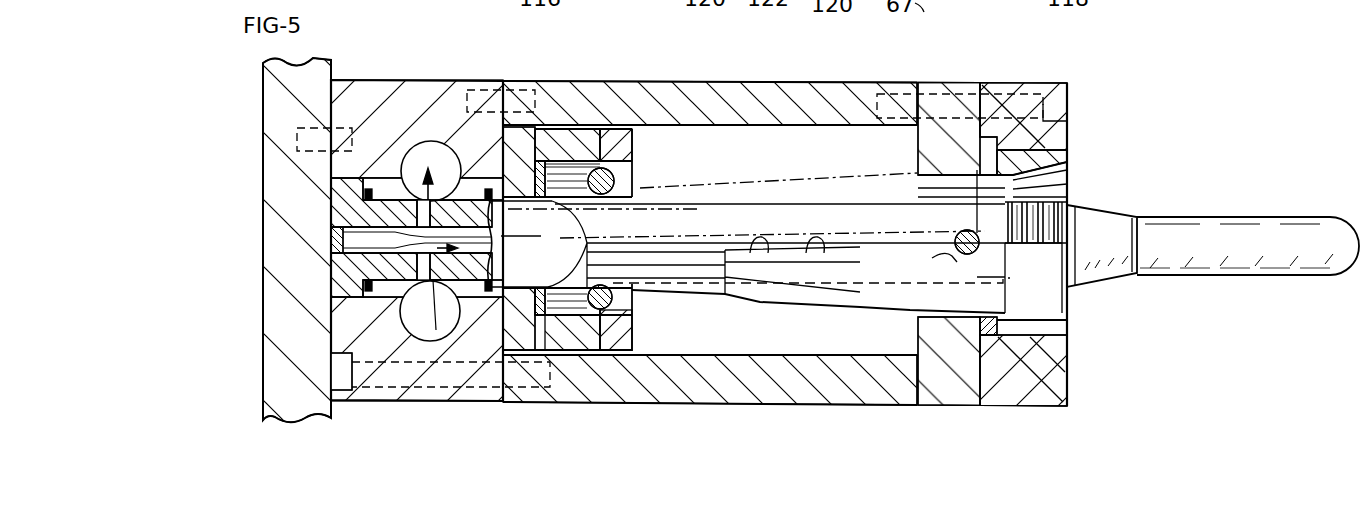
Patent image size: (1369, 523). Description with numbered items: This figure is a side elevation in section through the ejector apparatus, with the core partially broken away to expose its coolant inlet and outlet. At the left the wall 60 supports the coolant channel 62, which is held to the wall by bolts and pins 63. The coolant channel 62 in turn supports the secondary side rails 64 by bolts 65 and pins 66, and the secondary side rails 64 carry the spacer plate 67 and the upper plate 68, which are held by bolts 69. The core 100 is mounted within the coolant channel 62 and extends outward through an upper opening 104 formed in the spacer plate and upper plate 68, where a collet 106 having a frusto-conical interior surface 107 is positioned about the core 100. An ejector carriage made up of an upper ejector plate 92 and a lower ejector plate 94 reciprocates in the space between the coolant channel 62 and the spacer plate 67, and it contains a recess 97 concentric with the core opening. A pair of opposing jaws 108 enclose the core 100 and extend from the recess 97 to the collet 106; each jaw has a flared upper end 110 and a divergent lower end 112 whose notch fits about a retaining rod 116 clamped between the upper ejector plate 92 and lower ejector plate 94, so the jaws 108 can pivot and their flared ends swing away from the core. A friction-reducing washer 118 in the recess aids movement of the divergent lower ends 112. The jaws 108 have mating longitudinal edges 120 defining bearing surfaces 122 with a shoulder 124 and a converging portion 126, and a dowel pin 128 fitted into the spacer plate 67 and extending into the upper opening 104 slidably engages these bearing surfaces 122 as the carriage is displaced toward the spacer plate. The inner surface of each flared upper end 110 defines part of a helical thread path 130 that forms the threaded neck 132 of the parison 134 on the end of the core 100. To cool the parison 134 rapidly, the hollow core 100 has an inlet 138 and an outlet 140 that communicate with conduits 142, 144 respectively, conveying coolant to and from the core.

The wall 60 is at (297, 410).
The coolant channel 62 is at (365, 405).
The pin 63 is at (297, 128).
The secondary side rail 64 is at (812, 95).
The bolt 65 is at (462, 392).
The pin 66 is at (517, 90).
The spacer plate 67 is at (955, 85).
The upper plate 68 is at (1008, 390).
The bolt 69 is at (1030, 94).
The upper ejector plate 92 is at (615, 350).
The lower ejector plate 94 is at (515, 340).
The recess 97 is at (628, 312).
The core 100 is at (1316, 218).
The upper opening 104 is at (923, 180).
The collet 106 is at (1072, 163).
The frusto-conical interior surface 107 is at (1072, 181).
The jaw 108 is at (832, 178).
The flared upper end 110 is at (1075, 313).
The divergent lower end 112 is at (567, 315).
The retaining rod 116 is at (614, 182).
The washer 118 is at (595, 240).
The mating longitudinal edge 120 is at (978, 208).
The bearing surface 122 is at (813, 253).
The shoulder 124 is at (947, 260).
The converging portion 126 is at (757, 253).
The dowel pin 128 is at (945, 238).
The helical thread path 130 is at (1070, 198).
The threaded neck 132 is at (1076, 236).
The parison 134 is at (1230, 217).
The inlet 138 is at (436, 270).
The outlet 140 is at (433, 214).
The conduit 142 is at (436, 330).
The conduit 144 is at (431, 148).